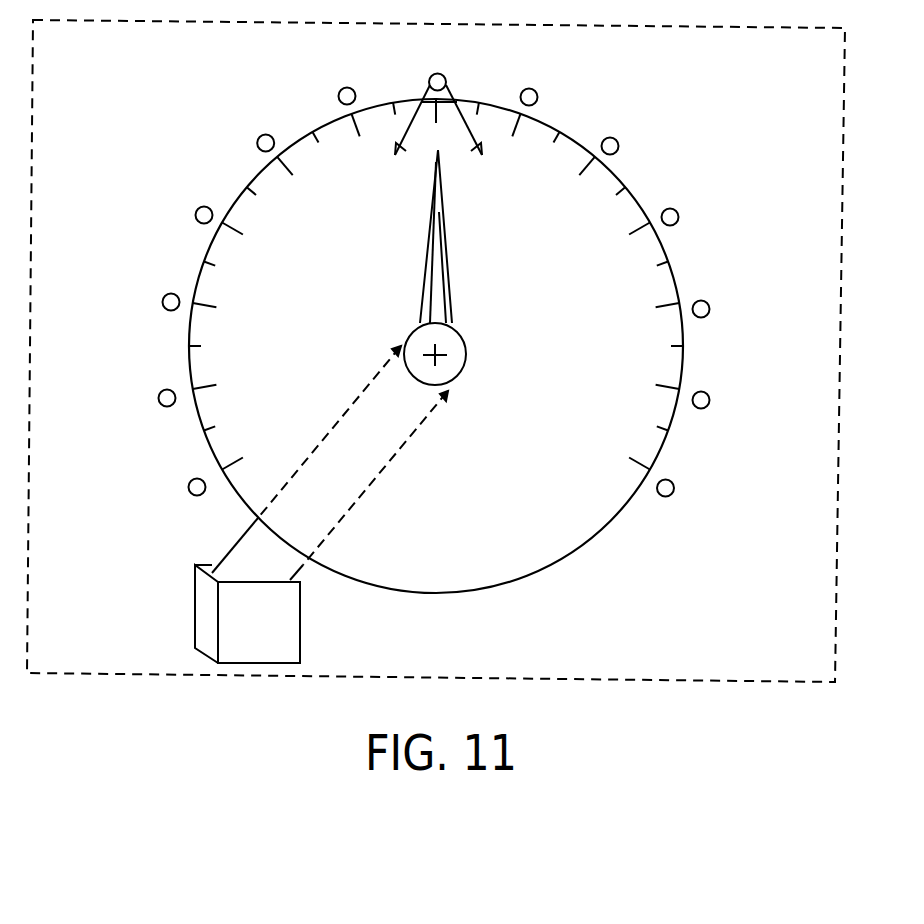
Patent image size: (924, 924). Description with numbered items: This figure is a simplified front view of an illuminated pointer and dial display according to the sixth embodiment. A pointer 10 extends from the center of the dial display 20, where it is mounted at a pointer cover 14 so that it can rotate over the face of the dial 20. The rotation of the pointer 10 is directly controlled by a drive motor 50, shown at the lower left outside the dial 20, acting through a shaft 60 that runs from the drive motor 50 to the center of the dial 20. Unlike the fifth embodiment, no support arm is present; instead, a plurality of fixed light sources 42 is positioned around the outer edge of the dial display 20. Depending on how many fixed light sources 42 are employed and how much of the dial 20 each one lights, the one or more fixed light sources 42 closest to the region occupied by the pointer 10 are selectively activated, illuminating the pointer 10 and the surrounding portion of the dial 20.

The pointer 10 is at (424, 268).
The pointer cover 14 is at (460, 387).
The dial display 20 is at (533, 495).
The fixed light sources 42 is at (193, 212).
The drive motor 50 is at (190, 614).
The shaft 60 is at (303, 575).